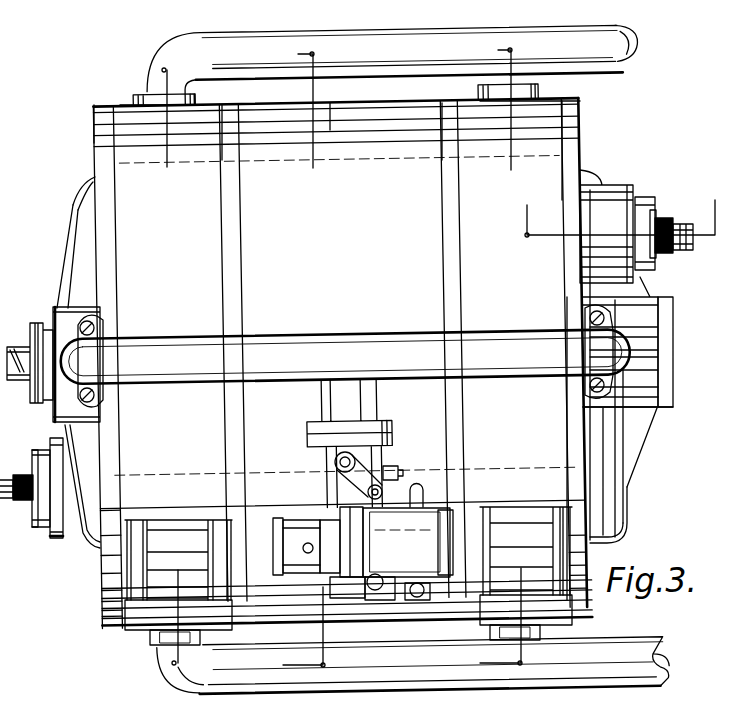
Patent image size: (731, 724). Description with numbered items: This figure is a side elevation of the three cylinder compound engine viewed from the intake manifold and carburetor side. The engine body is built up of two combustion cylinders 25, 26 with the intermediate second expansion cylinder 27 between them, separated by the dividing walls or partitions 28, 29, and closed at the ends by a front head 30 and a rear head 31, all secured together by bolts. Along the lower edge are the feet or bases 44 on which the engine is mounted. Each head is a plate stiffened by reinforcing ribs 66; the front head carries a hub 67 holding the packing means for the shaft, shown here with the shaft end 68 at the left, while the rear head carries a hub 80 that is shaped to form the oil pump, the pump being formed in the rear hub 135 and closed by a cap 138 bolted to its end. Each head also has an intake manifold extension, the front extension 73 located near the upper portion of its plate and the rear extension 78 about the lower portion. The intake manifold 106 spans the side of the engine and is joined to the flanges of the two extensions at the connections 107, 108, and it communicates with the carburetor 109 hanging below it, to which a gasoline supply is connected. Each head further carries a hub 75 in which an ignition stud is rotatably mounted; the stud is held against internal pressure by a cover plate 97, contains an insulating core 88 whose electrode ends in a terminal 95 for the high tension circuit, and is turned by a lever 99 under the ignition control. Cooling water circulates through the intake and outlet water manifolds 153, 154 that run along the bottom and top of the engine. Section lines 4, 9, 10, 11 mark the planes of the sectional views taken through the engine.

The outlet water manifold 154 is at (281, 38).
The intake water manifold 153 is at (588, 693).
The section line 9- 9 is at (162, 71).
The section line 10- 10 is at (498, 360).
The section line 11- 11 is at (300, 363).
The section line 4- 4 is at (620, 218).
The combustion cylinder 25 is at (130, 97).
The combustion cylinder 26 is at (540, 105).
The second expansion cylinder 27 is at (350, 115).
The dividing wall 28 is at (223, 118).
The dividing wall 29 is at (445, 115).
The front head 30 is at (103, 112).
The rear head 31 is at (570, 130).
The intake manifold extension 73 is at (85, 208).
The reinforcing ribs 66 is at (68, 248).
The intake manifold extension 78 is at (610, 513).
The hub 67 is at (55, 418).
The shaft hub 68 is at (40, 330).
The hub 75 is at (70, 538).
The cover plate 97 is at (57, 540).
The lever 99 is at (45, 528).
The insulating core 88 is at (25, 475).
The terminal 95 is at (12, 502).
The hub 80 is at (645, 300).
The cap 138 is at (668, 333).
The rear hub 135 is at (660, 392).
The intake manifold 106 is at (280, 343).
The connection 107 is at (100, 330).
The connection 108 is at (590, 320).
The carburetor 109 is at (335, 478).
The feet 44 is at (133, 622).